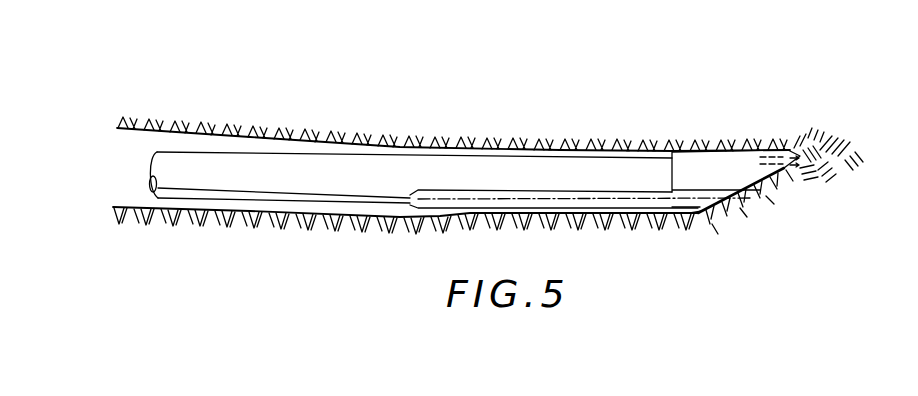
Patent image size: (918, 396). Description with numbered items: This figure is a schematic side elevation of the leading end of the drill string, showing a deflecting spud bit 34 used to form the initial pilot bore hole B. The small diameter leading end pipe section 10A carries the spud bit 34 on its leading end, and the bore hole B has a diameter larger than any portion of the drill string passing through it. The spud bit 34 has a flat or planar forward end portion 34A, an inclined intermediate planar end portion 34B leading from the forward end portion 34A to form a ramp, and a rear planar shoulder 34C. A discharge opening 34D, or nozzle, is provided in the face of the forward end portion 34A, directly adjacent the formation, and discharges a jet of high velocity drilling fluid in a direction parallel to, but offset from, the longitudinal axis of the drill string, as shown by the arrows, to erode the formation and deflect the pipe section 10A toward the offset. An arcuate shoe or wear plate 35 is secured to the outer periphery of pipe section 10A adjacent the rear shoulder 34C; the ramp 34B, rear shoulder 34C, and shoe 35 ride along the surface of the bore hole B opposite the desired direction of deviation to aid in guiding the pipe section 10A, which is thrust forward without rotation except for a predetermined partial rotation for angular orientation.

The pilot bore hole B is at (191, 128).
The leading end pipe section 10A is at (388, 163).
The spud bit 34 is at (751, 178).
The forward end portion 34A is at (790, 147).
The inclined intermediate planar end portion 34B is at (755, 193).
The rear planar shoulder 34C is at (680, 220).
The discharge opening 34D is at (770, 138).
The arcuate shoe 35 is at (605, 211).